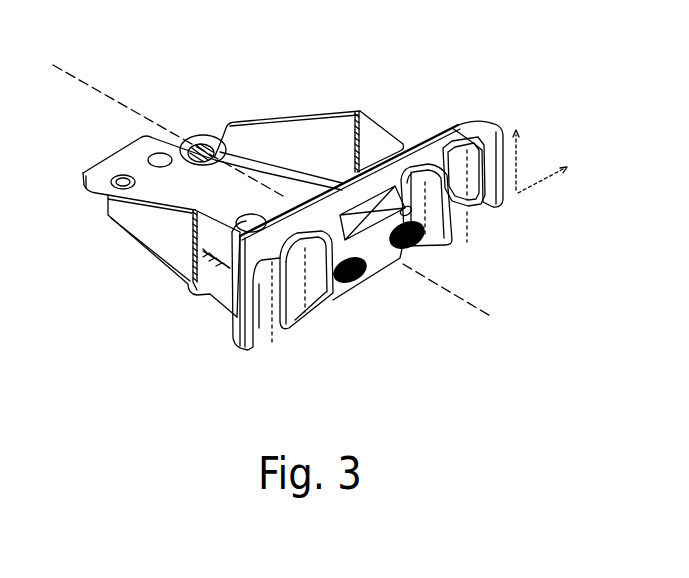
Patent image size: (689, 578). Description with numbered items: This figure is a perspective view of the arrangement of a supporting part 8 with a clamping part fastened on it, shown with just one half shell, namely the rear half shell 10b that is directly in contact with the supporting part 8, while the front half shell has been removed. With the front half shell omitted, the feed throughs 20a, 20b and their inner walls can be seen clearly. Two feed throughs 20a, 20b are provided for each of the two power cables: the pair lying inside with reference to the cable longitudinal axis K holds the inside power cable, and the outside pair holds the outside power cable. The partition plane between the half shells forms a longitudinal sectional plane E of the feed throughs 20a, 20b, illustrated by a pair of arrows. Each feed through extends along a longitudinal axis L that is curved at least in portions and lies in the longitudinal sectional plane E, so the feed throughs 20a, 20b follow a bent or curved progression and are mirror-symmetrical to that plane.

The cable longitudinal axis K is at (90, 82).
The supporting part 8 is at (335, 107).
The rear half shell 10b is at (490, 122).
The feed through 20a is at (423, 157).
The feed through 20b is at (467, 123).
The longitudinal sectional plane E is at (518, 200).
The longitudinal axis L is at (268, 322).